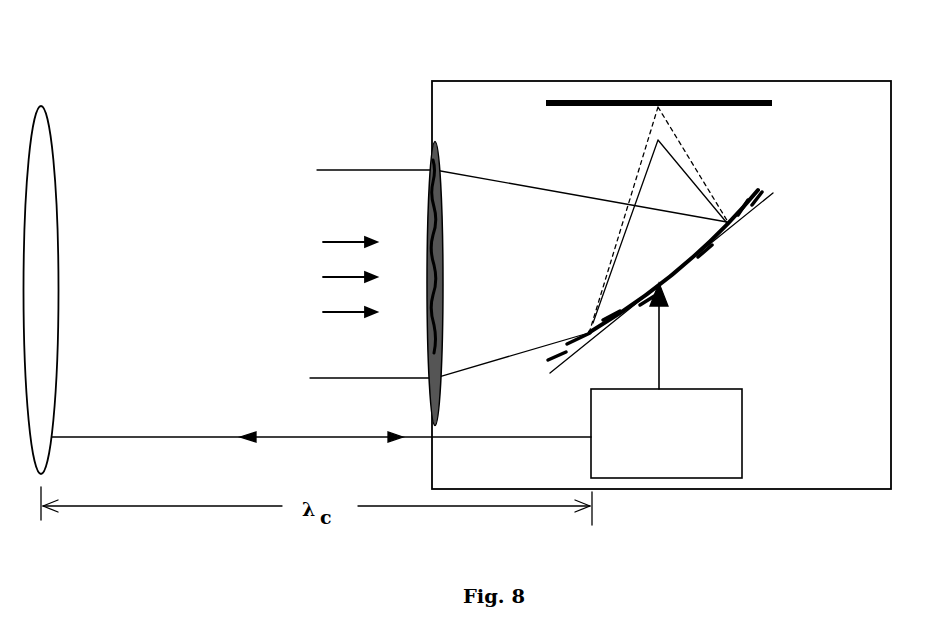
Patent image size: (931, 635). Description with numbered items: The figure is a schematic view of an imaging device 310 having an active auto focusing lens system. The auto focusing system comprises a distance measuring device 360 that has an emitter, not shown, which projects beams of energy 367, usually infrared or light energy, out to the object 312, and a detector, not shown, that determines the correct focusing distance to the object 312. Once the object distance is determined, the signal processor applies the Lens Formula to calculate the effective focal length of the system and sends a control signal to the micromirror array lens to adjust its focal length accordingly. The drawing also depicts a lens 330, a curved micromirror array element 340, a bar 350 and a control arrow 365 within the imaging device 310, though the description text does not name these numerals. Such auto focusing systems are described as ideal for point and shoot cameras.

The imaging device 310 is at (577, 80).
The object 312 is at (62, 158).
The lens 330 is at (433, 283).
The curved mirror 340 is at (700, 253).
The reflector bar 350 is at (722, 105).
The distance measuring device 360 is at (755, 410).
The actuation arrow 365 is at (670, 348).
The beams of energy 367 is at (143, 437).